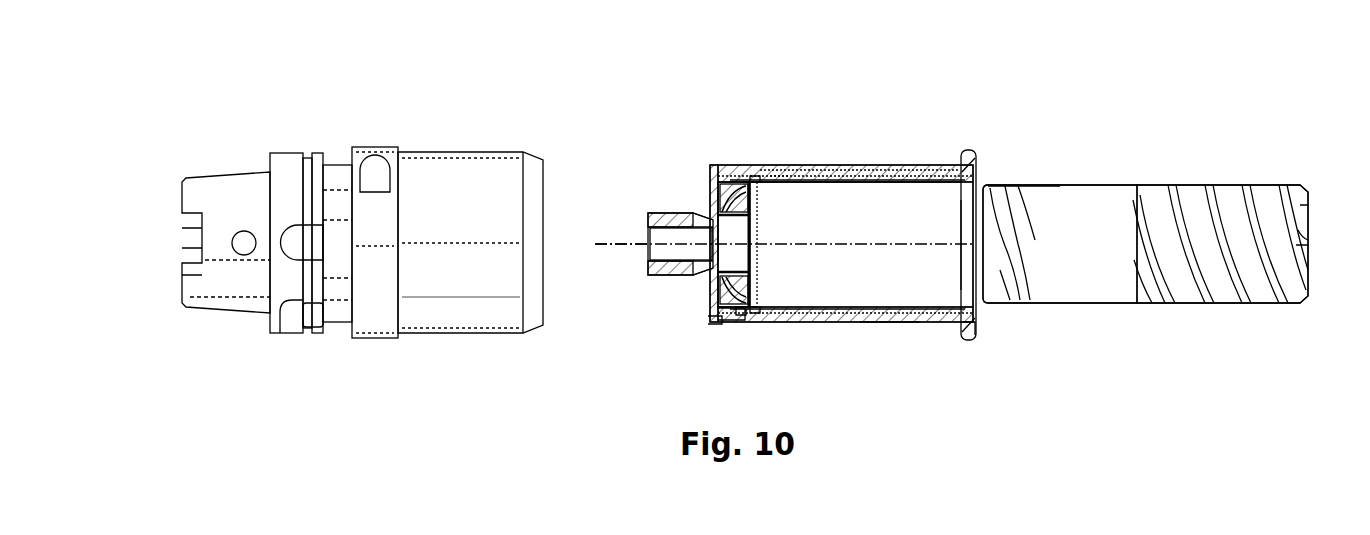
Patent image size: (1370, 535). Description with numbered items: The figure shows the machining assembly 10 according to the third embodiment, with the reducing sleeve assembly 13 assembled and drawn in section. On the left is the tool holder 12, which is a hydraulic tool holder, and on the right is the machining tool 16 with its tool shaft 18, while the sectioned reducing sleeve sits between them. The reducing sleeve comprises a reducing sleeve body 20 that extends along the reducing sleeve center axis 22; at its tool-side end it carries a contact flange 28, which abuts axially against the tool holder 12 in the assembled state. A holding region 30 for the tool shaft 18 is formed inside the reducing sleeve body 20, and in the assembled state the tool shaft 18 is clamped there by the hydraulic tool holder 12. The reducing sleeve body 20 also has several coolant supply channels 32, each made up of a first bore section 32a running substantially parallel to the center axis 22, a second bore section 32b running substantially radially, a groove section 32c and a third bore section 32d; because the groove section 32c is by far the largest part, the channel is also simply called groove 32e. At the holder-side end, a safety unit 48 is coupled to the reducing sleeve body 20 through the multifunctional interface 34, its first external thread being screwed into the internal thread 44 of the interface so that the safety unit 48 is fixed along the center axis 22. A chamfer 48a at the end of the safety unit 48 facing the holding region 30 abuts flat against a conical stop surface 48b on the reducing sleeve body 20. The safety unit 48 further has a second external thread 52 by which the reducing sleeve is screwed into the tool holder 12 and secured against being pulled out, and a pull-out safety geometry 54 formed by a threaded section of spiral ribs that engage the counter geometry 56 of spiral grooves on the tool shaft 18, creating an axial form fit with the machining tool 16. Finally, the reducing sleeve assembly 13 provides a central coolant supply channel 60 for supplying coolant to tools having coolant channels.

The machining assembly 10 is at (1220, 124).
The tool holder 12 is at (430, 146).
The reducing sleeve assembly 13 is at (912, 150).
The machining tool 16 is at (1155, 174).
The tool shaft 18 is at (1068, 174).
The reducing sleeve body 20 is at (784, 172).
The reducing sleeve center axis 22 is at (600, 247).
The contact flange 28 is at (972, 142).
The holding region 30 is at (975, 332).
The coolant supply channel 32 is at (908, 322).
The first bore section 32a is at (706, 320).
The second bore section 32b is at (728, 322).
The groove section 32c is at (890, 322).
The third bore section 32d is at (976, 330).
The groove 32e is at (866, 165).
The multifunctional interface 34 is at (734, 170).
The internal thread 44 is at (742, 318).
The safety unit 48 is at (667, 170).
The chamfer 48a is at (757, 174).
The stop surface 48b is at (755, 310).
The second external thread 52 is at (656, 288).
The pull-out safety geometry 54 is at (765, 284).
The counter geometry 56 is at (1004, 174).
The central coolant supply channel 60 is at (648, 236).